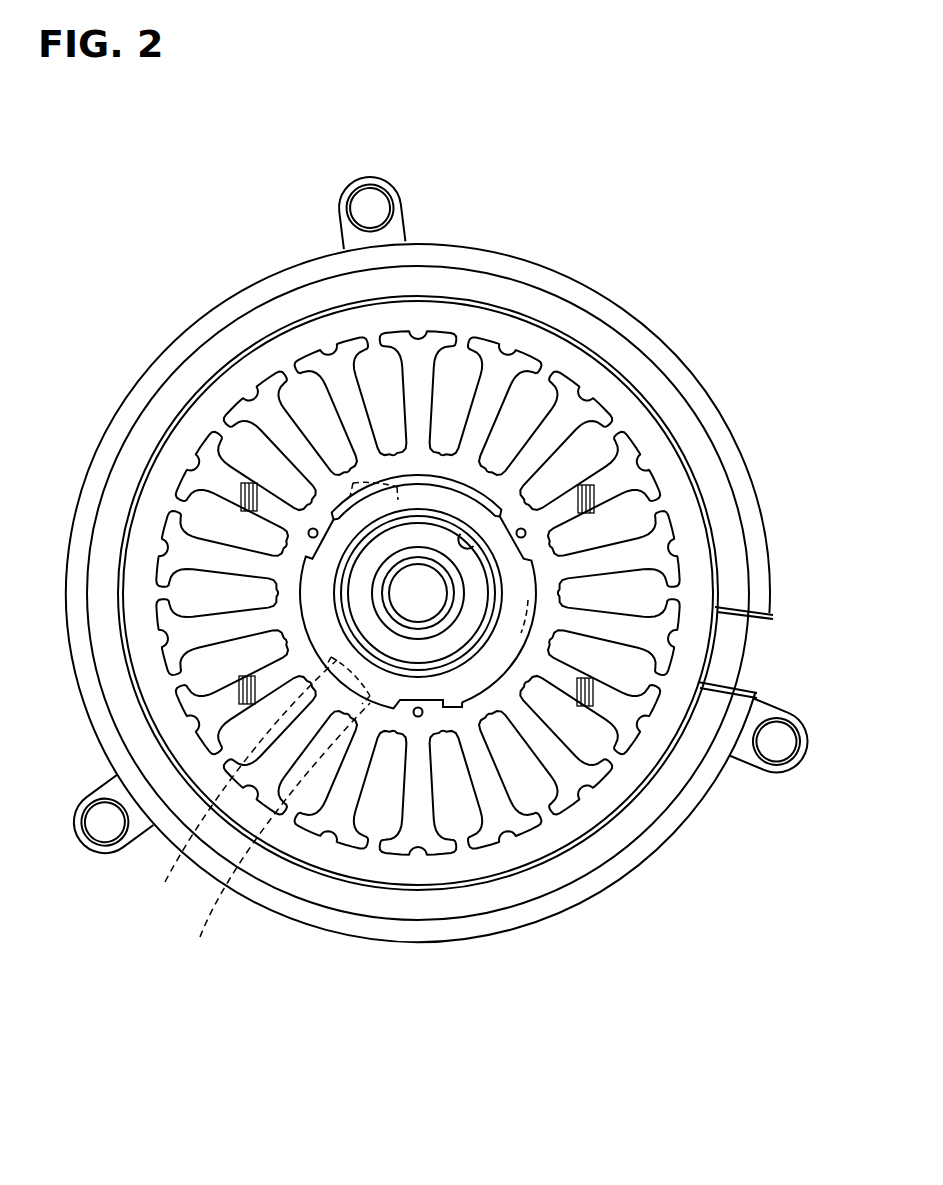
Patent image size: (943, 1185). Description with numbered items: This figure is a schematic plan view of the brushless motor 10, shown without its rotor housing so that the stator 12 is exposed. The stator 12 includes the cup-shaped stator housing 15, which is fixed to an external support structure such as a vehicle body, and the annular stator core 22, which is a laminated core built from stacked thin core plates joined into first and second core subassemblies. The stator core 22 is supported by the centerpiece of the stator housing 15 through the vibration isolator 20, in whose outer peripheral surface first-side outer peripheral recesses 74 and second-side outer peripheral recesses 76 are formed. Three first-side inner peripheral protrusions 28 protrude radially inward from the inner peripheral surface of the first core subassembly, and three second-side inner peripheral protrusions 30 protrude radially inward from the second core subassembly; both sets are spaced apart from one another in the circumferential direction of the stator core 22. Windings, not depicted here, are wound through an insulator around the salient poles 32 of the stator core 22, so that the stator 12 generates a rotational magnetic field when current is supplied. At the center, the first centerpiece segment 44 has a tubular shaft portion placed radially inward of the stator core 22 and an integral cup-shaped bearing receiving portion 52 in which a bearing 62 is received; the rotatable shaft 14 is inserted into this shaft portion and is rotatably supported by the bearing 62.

The brushless motor 10 is at (450, 148).
The stator 12 is at (536, 350).
The rotatable shaft 14 is at (455, 595).
The stator housing 15 is at (738, 424).
The vibration isolator 20 is at (614, 787).
The stator core 22 is at (308, 832).
The first-side inner peripheral protrusions 28 is at (457, 707).
The second-side inner peripheral protrusions 30 is at (278, 834).
The salient poles 32 is at (508, 776).
The first centerpiece segment 44 is at (452, 487).
The bearing receiving portion 52 is at (458, 532).
The bearing 62 is at (505, 548).
The first-side outer peripheral recesses 74 is at (410, 702).
The second-side outer peripheral recesses 76 is at (229, 782).